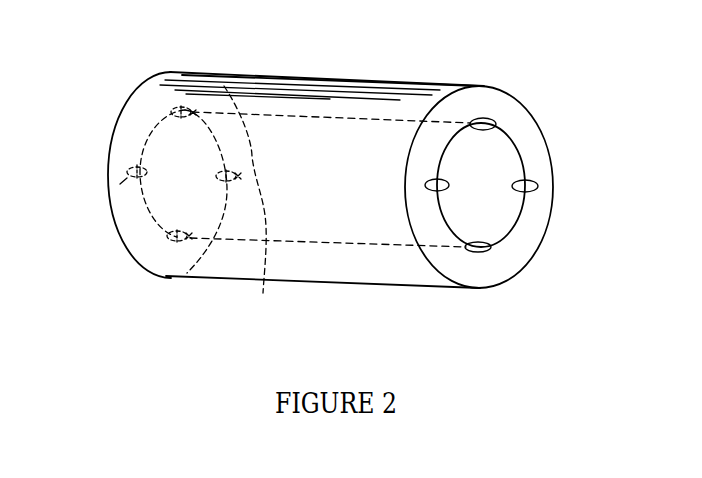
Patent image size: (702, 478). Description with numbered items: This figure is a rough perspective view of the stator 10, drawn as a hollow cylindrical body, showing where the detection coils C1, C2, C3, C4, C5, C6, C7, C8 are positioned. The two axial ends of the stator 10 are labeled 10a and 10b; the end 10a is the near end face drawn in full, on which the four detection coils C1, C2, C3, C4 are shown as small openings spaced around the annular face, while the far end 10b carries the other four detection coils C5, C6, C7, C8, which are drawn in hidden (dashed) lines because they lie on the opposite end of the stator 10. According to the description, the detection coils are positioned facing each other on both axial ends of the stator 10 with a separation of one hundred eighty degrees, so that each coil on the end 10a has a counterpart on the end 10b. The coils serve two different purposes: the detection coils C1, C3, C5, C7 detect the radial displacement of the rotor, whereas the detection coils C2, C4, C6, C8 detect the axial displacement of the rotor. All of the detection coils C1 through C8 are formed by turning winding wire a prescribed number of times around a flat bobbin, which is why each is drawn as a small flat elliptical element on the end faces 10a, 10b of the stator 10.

The stator 10 is at (339, 74).
The first end face 10a is at (455, 87).
The second end face 10b is at (170, 72).
The detection coil C1 is at (494, 122).
The detection coil C2 is at (432, 185).
The detection coil C3 is at (483, 252).
The detection coil C4 is at (538, 186).
The detection coil C5 is at (178, 111).
The detection coil C6 is at (120, 180).
The detection coil C7 is at (176, 241).
The detection coil C8 is at (240, 178).